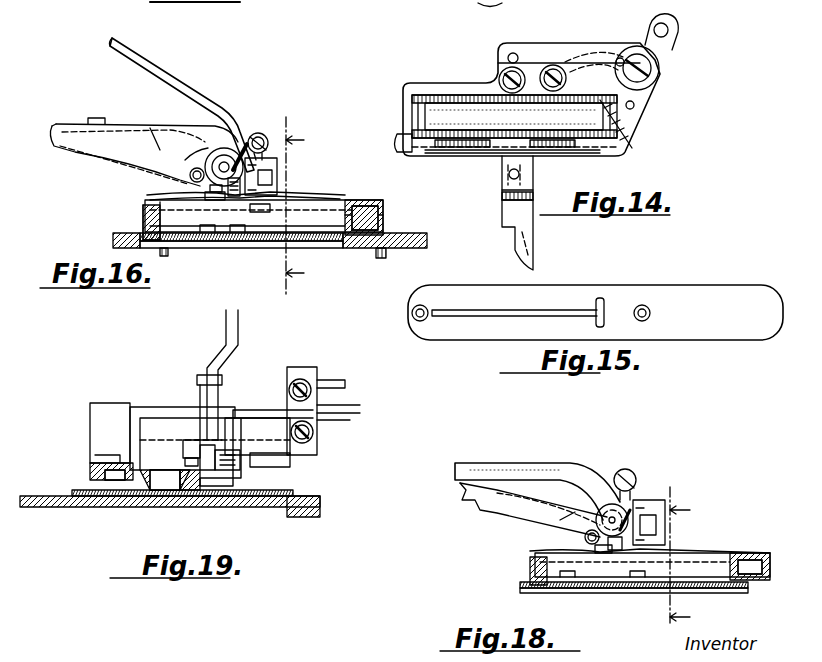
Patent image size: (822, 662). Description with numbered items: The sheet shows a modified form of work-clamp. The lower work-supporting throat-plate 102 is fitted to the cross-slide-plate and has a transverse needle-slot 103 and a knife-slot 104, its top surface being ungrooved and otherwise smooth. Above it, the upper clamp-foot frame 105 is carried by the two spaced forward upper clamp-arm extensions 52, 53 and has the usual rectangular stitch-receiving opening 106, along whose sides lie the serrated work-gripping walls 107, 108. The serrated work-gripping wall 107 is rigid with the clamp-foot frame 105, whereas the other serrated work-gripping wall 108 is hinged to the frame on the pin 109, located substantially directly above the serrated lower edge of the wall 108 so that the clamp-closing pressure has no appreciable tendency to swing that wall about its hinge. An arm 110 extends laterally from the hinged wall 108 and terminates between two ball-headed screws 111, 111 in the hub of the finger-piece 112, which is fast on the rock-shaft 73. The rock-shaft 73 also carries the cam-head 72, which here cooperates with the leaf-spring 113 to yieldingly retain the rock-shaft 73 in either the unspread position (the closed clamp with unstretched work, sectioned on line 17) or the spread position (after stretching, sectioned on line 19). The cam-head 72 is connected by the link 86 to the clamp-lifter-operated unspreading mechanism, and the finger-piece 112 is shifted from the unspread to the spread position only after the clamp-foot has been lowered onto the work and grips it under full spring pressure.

In FIG. 19, the upper clamp-arm extension 52 is at (100, 427).
In FIG. 16, the upper clamp-arm extension 53 is at (170, 193).
In FIG. 19, the upper clamp-arm extension 53 is at (262, 460).
In FIG. 16, the cam-head 72 is at (210, 196).
In FIG. 19, the cam-head 72 is at (188, 440).
In FIG. 18, the cam-head 72 is at (620, 548).
In FIG. 16, the rock-shaft 73 is at (222, 160).
In FIG. 19, the rock-shaft 73 is at (227, 417).
In FIG. 18, the rock-shaft 73 is at (606, 508).
In FIG. 16, the link 86 is at (88, 132).
In FIG. 19, the link 86 is at (203, 383).
In FIG. 18, the link 86 is at (533, 513).
In FIG. 16, the work-supporting throat-plate 102 is at (393, 243).
In FIG. 15, the work-supporting throat-plate 102 is at (678, 286).
In FIG. 19, the work-supporting throat-plate 102 is at (140, 497).
In FIG. 15, the transverse needle-slot 103 is at (605, 305).
In FIG. 15, the knife-slot 104 is at (553, 310).
In FIG. 19, the knife-slot 104 is at (168, 507).
In FIG. 16, the upper clamp-foot frame 105 is at (364, 206).
In FIG. 14, the upper clamp-foot frame 105 is at (547, 50).
In FIG. 19, the upper clamp-foot frame 105 is at (90, 472).
In FIG. 18, the upper clamp-foot frame 105 is at (746, 553).
In FIG. 14, the rectangular stitch-receiving opening 106 is at (467, 117).
In FIG. 14, the serrated work-gripping wall 107 is at (443, 97).
In FIG. 19, the serrated work-gripping wall 107 is at (143, 490).
In FIG. 16, the serrated work-gripping wall 108 is at (307, 223).
In FIG. 14, the serrated work-gripping wall 108 is at (453, 139).
In FIG. 19, the serrated work-gripping wall 108 is at (185, 494).
In FIG. 18, the serrated work-gripping wall 108 is at (580, 575).
In FIG. 16, the hinge pin 109 is at (284, 210).
In FIG. 14, the hinge pin 109 is at (590, 150).
In FIG. 19, the hinge pin 109 is at (183, 443).
In FIG. 16, the arm 110 is at (277, 160).
In FIG. 14, the arm 110 is at (524, 232).
In FIG. 19, the arm 110 is at (240, 481).
In FIG. 18, the arm 110 is at (651, 500).
In FIG. 16, the ball-headed screws 111 is at (254, 131).
In FIG. 19, the ball-headed screws 111 is at (314, 436).
In FIG. 18, the ball-headed screws 111 is at (632, 478).
In FIG. 16, the finger-piece 112 is at (197, 90).
In FIG. 19, the finger-piece 112 is at (305, 372).
In FIG. 18, the finger-piece 112 is at (540, 466).
In FIG. 16, the leaf-spring 113 is at (226, 197).
In FIG. 19, the leaf-spring 113 is at (215, 442).
In FIG. 18, the leaf-spring 113 is at (613, 552).
In FIG. 16, the section line 17— 17 is at (300, 207).
In FIG. 18, the section line 19— 19 is at (685, 556).